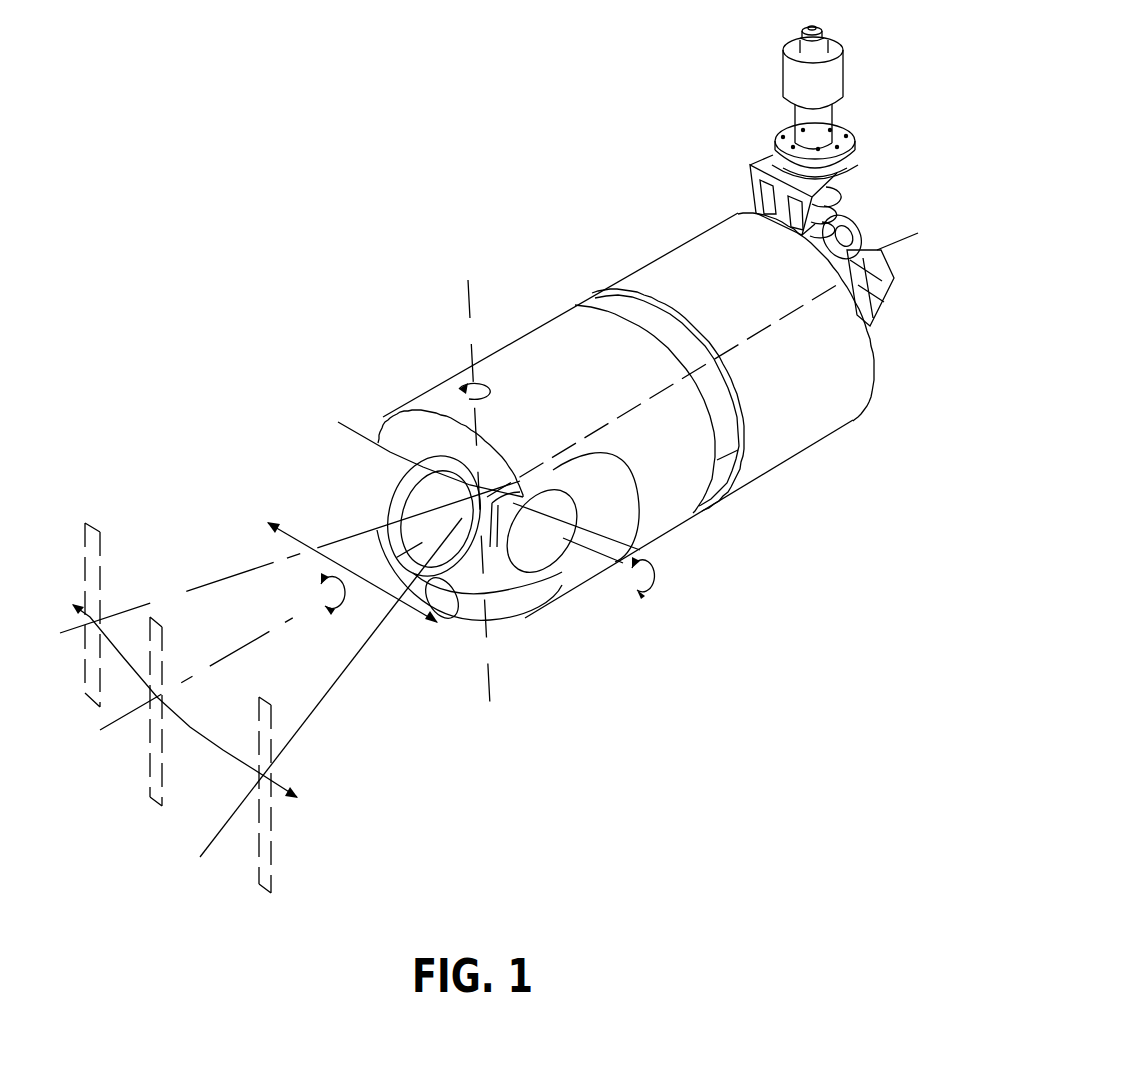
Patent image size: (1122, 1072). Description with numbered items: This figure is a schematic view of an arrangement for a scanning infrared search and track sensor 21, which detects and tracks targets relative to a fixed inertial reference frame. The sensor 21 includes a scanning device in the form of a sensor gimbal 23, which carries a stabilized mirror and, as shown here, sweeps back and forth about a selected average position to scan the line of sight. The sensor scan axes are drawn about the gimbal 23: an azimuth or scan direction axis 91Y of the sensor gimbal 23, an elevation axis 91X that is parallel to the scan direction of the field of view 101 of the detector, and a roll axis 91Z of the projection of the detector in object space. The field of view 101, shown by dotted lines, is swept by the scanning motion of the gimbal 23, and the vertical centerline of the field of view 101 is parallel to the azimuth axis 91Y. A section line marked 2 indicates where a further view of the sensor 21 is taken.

The scanning infrared search and track sensor 21 is at (610, 250).
The sensor gimbal 23 is at (532, 590).
The elevation axis 91X is at (617, 563).
The azimuth or scan direction axis 91Y is at (472, 357).
The roll axis 91Z is at (312, 602).
The field of view 101 is at (92, 702).
The section line 2- 2 is at (468, 278).